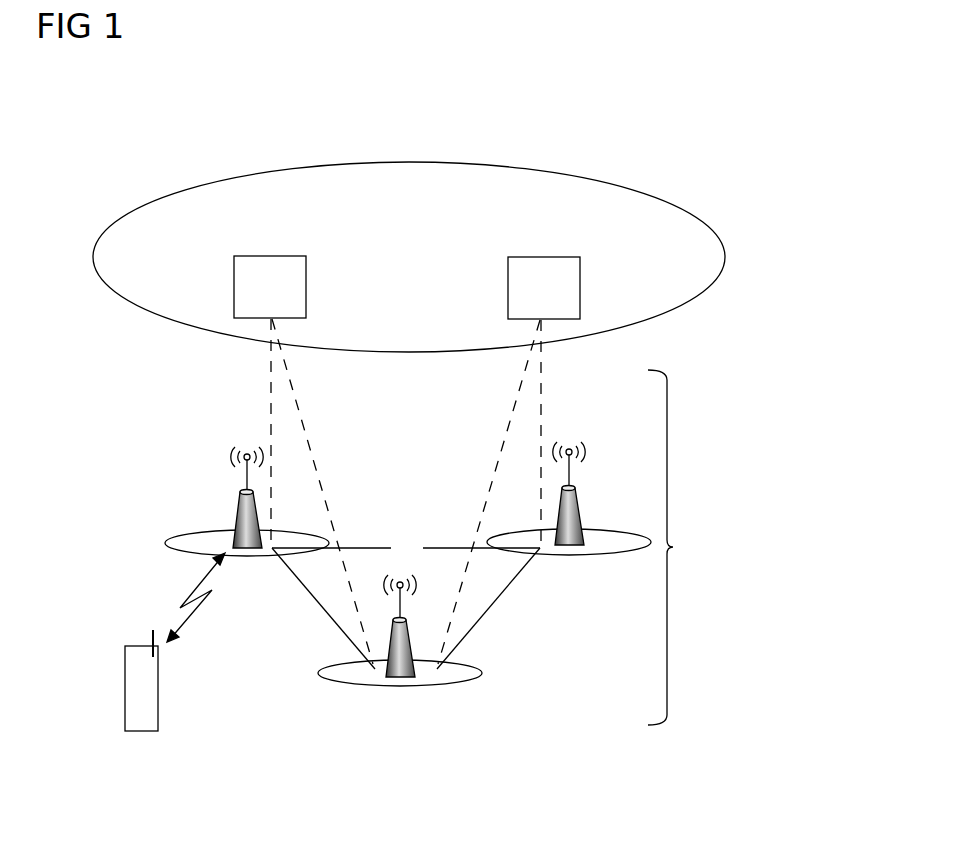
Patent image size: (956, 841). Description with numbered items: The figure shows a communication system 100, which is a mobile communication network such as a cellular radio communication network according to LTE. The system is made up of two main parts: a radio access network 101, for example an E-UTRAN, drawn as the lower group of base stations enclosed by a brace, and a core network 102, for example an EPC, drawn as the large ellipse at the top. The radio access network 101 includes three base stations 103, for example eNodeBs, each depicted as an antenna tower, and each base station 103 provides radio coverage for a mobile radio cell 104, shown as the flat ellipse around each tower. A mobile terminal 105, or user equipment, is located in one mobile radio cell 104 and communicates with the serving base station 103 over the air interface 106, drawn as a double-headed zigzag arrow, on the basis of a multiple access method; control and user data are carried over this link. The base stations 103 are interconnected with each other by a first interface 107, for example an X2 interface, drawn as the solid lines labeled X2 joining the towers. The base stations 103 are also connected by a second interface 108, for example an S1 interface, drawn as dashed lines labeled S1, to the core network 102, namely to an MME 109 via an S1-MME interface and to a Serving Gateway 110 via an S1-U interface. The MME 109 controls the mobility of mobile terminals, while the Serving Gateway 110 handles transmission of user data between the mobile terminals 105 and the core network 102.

The communication system 100 is at (698, 97).
The radio access network 101 is at (760, 522).
The core network 102 is at (712, 232).
The base station 103 is at (237, 500).
The mobile radio cell 104 is at (178, 545).
The mobile terminal 105 is at (143, 731).
The air interface 106 is at (215, 608).
The first interface 107 is at (400, 524).
The second interface 108 is at (269, 385).
The MME 109 is at (268, 256).
The Serving Gateway 110 is at (544, 257).